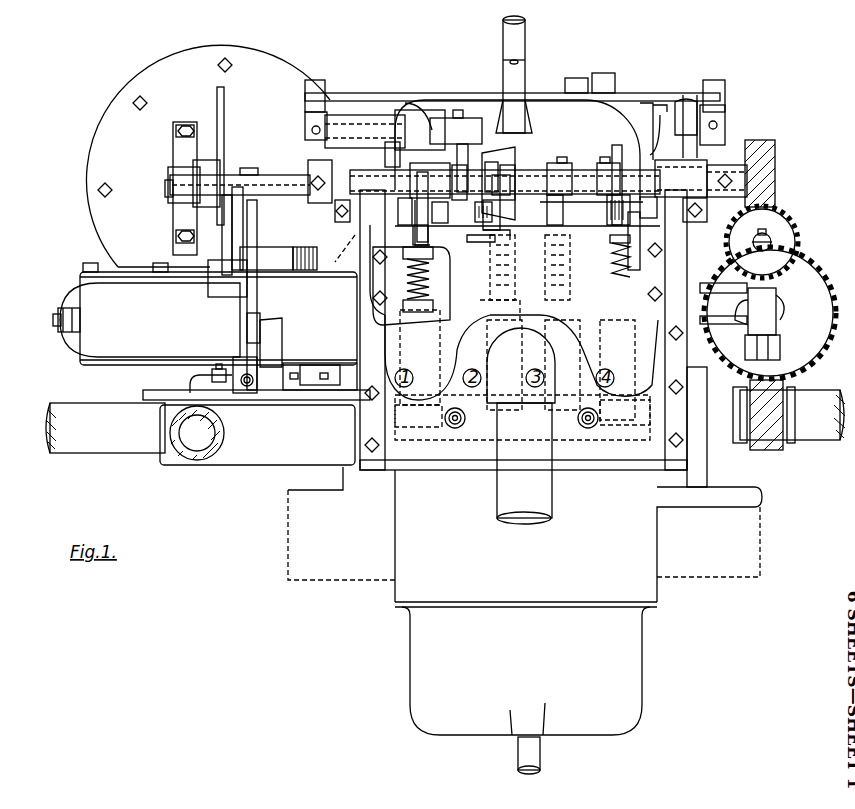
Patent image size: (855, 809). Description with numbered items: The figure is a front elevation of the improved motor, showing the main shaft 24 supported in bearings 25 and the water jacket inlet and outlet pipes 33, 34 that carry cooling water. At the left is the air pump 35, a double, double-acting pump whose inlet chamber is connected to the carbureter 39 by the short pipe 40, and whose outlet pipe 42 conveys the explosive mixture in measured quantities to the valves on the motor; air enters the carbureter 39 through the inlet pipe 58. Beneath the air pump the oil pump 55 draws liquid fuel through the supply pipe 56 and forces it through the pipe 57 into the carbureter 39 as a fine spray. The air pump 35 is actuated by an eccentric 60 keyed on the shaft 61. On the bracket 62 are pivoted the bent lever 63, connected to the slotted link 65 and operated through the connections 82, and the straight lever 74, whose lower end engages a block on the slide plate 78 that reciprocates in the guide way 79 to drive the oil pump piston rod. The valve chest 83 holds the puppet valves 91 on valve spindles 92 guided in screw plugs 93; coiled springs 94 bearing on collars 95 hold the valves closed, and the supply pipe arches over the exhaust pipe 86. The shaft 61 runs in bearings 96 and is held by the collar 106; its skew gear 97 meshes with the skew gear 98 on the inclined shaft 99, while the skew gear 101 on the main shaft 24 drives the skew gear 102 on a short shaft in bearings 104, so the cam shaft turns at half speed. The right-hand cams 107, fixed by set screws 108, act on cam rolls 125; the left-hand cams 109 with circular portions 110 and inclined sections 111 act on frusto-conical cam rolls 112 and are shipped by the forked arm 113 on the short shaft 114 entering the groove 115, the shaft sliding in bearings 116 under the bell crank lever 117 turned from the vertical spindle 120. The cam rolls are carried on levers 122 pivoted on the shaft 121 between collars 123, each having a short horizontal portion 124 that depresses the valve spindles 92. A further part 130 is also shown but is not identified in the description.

The main shaft 24 is at (102, 440).
The bearings 25 is at (696, 408).
The inlet pipe 33 is at (536, 762).
The outlet pipe 34 is at (522, 85).
The air pump 35 is at (106, 126).
The carbureter 39 is at (257, 455).
The short pipe 40 is at (320, 378).
The outlet pipe 42 is at (140, 345).
The oil pump 55 is at (240, 363).
The supply pipe 56 is at (249, 387).
The pipe 57 is at (195, 381).
The inlet pipe 58 is at (193, 452).
The eccentric 60 is at (176, 152).
The shaft 61 is at (262, 184).
The bracket 62 is at (268, 258).
The bent lever 63 is at (233, 270).
The slotted link 65 is at (220, 223).
The straight lever 74 is at (245, 232).
The slide plate 78 is at (270, 341).
The guide way 79 is at (262, 321).
The connections 82 is at (222, 110).
The valve chest 83 is at (385, 415).
The exhaust pipe 86 is at (508, 498).
The valves 91 is at (430, 428).
The valve spindles 92 is at (420, 374).
The screw plugs 93 is at (533, 349).
The coiled springs 94 is at (500, 277).
The collar 95 is at (433, 262).
The bearings 96 is at (518, 315).
The skew gear 97 is at (770, 168).
The skew gear 98 is at (783, 241).
The inclined shaft 99 is at (785, 243).
The skew gear 101 is at (772, 446).
The skew gear 102 is at (780, 310).
The bearings 104 is at (613, 150).
The collar 106 is at (313, 175).
The right-hand cams 107 is at (552, 160).
The set screws 108 is at (602, 162).
The left-hand cams 109 is at (488, 170).
The circular portions 110 is at (438, 187).
The inclined section 111 is at (447, 242).
The cam rolls 112 is at (355, 229).
The arm 113 is at (460, 150).
The short shaft 114 is at (408, 128).
The groove 115 is at (483, 163).
The bearings 116 is at (338, 120).
The bell crank lever 117 is at (352, 99).
The vertical spindle 120 is at (527, 42).
The shaft 121 is at (655, 208).
The levers 122 is at (633, 228).
The collars 123 is at (643, 198).
The short horizontal portion 124 is at (604, 252).
The cam rolls 125 is at (615, 207).
The screw 130 is at (457, 428).